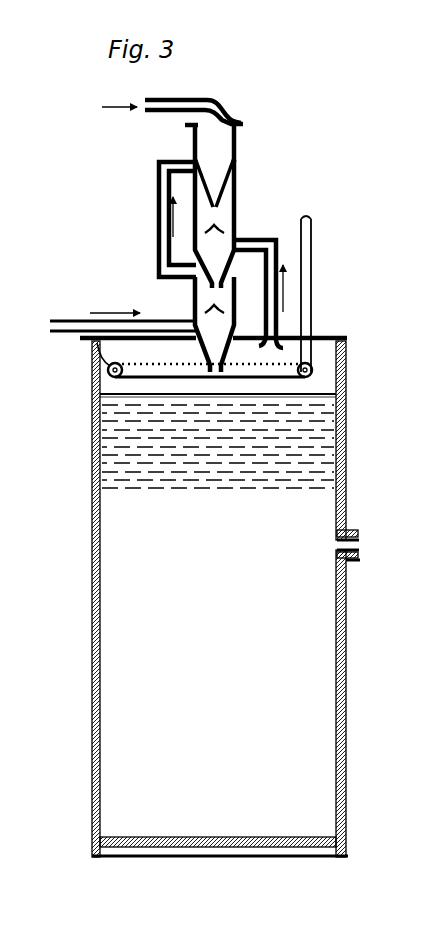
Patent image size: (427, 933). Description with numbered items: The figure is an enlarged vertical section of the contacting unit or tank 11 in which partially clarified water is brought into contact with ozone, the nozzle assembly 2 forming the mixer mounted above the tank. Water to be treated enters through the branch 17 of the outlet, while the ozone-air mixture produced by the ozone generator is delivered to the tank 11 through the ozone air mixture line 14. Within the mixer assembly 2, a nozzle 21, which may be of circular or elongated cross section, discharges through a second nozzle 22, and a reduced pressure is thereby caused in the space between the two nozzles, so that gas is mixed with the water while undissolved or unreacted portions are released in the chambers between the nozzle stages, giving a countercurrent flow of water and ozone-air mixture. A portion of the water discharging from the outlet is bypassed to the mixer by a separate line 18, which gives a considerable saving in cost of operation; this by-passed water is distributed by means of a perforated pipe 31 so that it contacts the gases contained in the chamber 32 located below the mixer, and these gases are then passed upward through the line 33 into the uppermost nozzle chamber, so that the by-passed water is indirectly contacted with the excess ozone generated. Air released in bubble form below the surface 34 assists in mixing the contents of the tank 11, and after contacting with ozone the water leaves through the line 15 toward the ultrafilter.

The funnel housing 2 is at (237, 145).
The nozzle 21 is at (228, 178).
The second nozzle 22 is at (224, 211).
The line 33 is at (267, 261).
The branch 17 is at (157, 100).
The separate line 18 is at (313, 263).
The ozone air mixture line 14 is at (83, 300).
The perforated pipe 31 is at (93, 353).
The chamber 32 is at (325, 364).
The surface 34 is at (192, 393).
The contacting unit or tank 11 is at (345, 425).
The line 15 is at (359, 543).